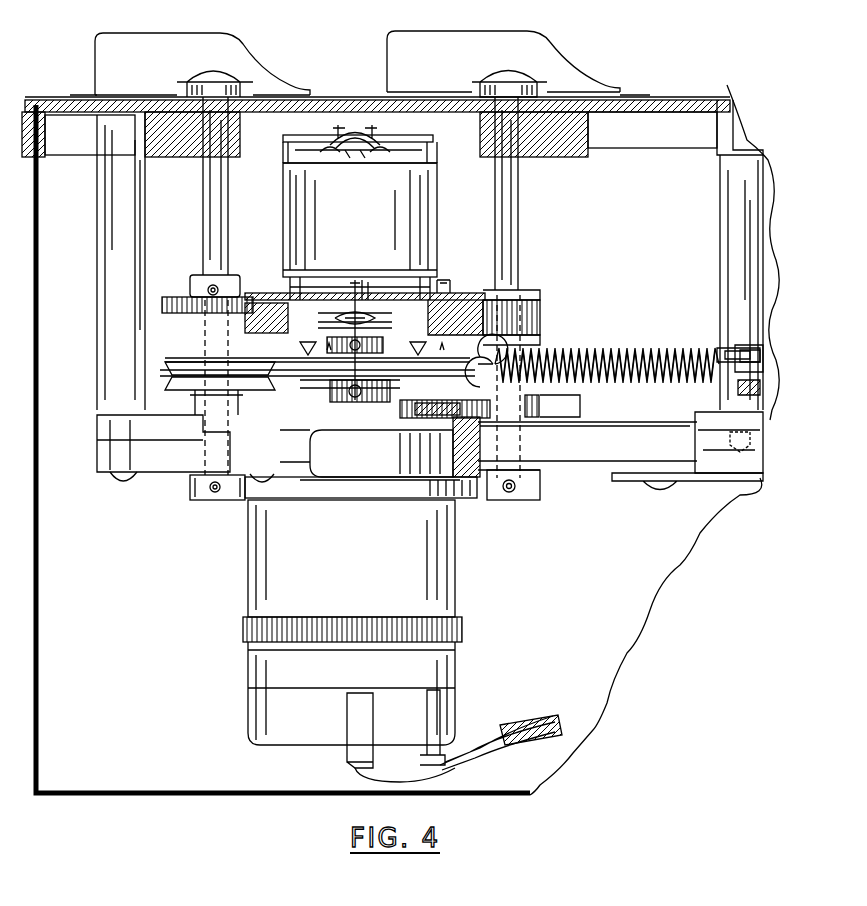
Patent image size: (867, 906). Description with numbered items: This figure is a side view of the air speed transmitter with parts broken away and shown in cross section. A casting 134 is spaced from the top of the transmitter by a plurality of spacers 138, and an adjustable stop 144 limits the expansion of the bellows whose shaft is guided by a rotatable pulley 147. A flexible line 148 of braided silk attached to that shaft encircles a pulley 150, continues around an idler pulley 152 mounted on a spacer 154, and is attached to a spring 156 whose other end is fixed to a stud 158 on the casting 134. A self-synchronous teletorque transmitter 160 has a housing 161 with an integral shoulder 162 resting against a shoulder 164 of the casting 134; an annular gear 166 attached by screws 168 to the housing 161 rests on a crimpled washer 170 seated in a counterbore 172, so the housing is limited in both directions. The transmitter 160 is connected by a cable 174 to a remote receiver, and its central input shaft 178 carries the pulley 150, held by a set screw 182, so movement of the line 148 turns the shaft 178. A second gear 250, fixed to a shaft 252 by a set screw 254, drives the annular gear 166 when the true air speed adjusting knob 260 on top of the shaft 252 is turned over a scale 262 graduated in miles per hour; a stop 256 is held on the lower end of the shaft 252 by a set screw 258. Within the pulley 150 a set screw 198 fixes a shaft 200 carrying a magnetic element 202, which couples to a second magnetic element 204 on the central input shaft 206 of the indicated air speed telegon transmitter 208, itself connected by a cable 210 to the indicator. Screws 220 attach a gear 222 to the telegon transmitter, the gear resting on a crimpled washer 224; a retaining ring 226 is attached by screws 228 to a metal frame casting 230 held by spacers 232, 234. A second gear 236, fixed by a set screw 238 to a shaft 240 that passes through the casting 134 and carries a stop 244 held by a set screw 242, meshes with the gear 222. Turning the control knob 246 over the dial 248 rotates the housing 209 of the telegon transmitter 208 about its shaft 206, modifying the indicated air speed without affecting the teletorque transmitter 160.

The casting 134 is at (578, 452).
The spacers 138 is at (112, 215).
The adjustable stop 144 is at (630, 482).
The rotatable pulley 147 is at (627, 350).
The flexible line 148 is at (455, 350).
The pulley 150 is at (330, 385).
The idler pulley 152 is at (185, 370).
The spacer 154 is at (213, 402).
The spring 156 is at (633, 380).
The stud 158 is at (738, 375).
The self-synchronous teletorque transmitter 160 is at (265, 674).
The housing 161 is at (290, 590).
The shoulder 162 is at (455, 495).
The shoulder 164 is at (485, 465).
The annular gear 166 is at (447, 415).
The screws 168 is at (437, 400).
The crimpled washer 170 is at (472, 500).
The counterbore 172 is at (560, 423).
The cable 174 is at (542, 722).
The central input shaft 178 is at (358, 420).
The set screw 182 is at (375, 383).
The set screw 198 is at (336, 343).
The shaft 200 is at (352, 330).
The magnetic element 202 is at (367, 318).
The second magnetic element 204 is at (342, 295).
The central input shaft 206 is at (362, 288).
The indicated air speed telegon transmitter 208 is at (446, 238).
The housing 209 is at (415, 203).
The cable 210 is at (352, 120).
The screws 220 is at (492, 308).
The gear 222 is at (283, 290).
The crimpled washer 224 is at (287, 329).
The retaining ring 226 is at (465, 293).
The screws 228 is at (445, 283).
The metal frame casting 230 is at (487, 291).
The spacer 232 is at (250, 410).
The spacer 234 is at (490, 335).
The second gear 236 is at (183, 300).
The set screw 238 is at (205, 280).
The shaft 240 is at (212, 212).
The set screw 242 is at (213, 500).
The stop 244 is at (190, 490).
The control knob 246 is at (240, 48).
The dial 248 is at (85, 97).
The second gear 250 is at (560, 405).
The shaft 252 is at (517, 207).
The set screw 254 is at (528, 403).
The stop 256 is at (517, 497).
The set screw 258 is at (511, 493).
The true air speed adjusting knob 260 is at (538, 46).
The scale 262 is at (640, 97).